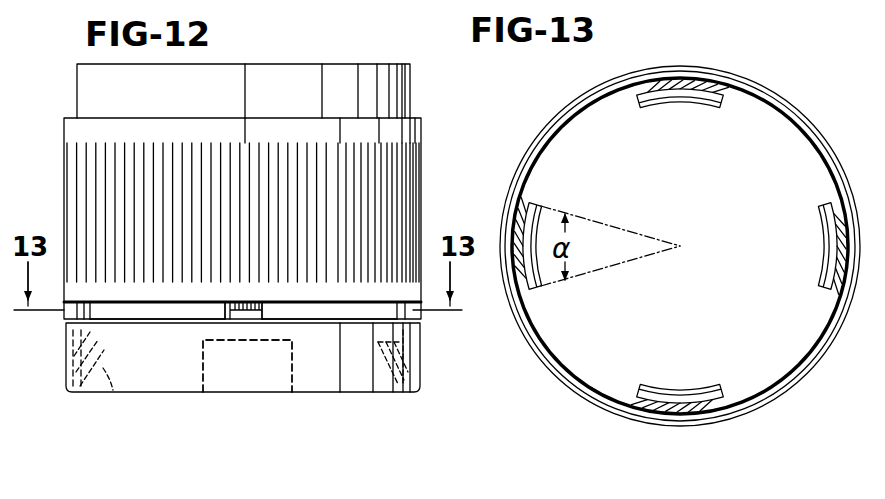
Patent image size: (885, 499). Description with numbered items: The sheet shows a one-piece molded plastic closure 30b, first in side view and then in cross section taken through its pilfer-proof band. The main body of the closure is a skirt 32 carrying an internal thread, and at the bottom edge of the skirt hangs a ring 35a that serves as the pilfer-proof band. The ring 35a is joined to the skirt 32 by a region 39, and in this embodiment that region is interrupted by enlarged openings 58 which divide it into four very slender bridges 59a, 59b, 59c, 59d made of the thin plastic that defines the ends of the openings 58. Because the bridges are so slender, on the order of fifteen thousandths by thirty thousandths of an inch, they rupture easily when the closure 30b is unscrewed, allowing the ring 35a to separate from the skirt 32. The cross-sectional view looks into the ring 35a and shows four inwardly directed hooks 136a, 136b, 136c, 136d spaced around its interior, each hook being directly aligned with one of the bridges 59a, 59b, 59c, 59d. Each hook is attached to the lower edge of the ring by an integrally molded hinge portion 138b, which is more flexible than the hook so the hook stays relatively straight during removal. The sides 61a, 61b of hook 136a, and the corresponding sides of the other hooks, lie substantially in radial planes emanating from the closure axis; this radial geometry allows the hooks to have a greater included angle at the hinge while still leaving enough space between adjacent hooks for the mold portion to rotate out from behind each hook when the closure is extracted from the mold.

In FIG. 12, the closure 30b is at (78, 88).
In FIG. 13, the closure 30b is at (578, 92).
In FIG. 12, the skirt 32 is at (64, 160).
In FIG. 12, the region 39 is at (66, 317).
In FIG. 12, the ring 35a is at (137, 393).
In FIG. 12, the openings 58 is at (167, 311).
In FIG. 13, the openings 58 is at (748, 98).
In FIG. 12, the bridge 59a is at (80, 308).
In FIG. 13, the bridge 59a is at (522, 232).
In FIG. 12, the bridge 59b is at (402, 310).
In FIG. 13, the bridge 59b is at (838, 240).
In FIG. 12, the bridge 59c is at (240, 311).
In FIG. 13, the bridge 59c is at (665, 410).
In FIG. 12, the bridge 59d is at (240, 311).
In FIG. 13, the bridge 59d is at (668, 78).
In FIG. 13, the side of hook 61a is at (528, 288).
In FIG. 13, the side of hook 61b is at (530, 206).
In FIG. 12, the hook 136a is at (113, 389).
In FIG. 13, the hook 136a is at (520, 202).
In FIG. 12, the hook 136b is at (375, 366).
In FIG. 13, the hook 136b is at (820, 210).
In FIG. 12, the hook 136c is at (290, 362).
In FIG. 13, the hook 136c is at (697, 403).
In FIG. 12, the hook 136d is at (290, 362).
In FIG. 13, the hook 136d is at (712, 80).
In FIG. 12, the hinge portion 138b is at (410, 393).